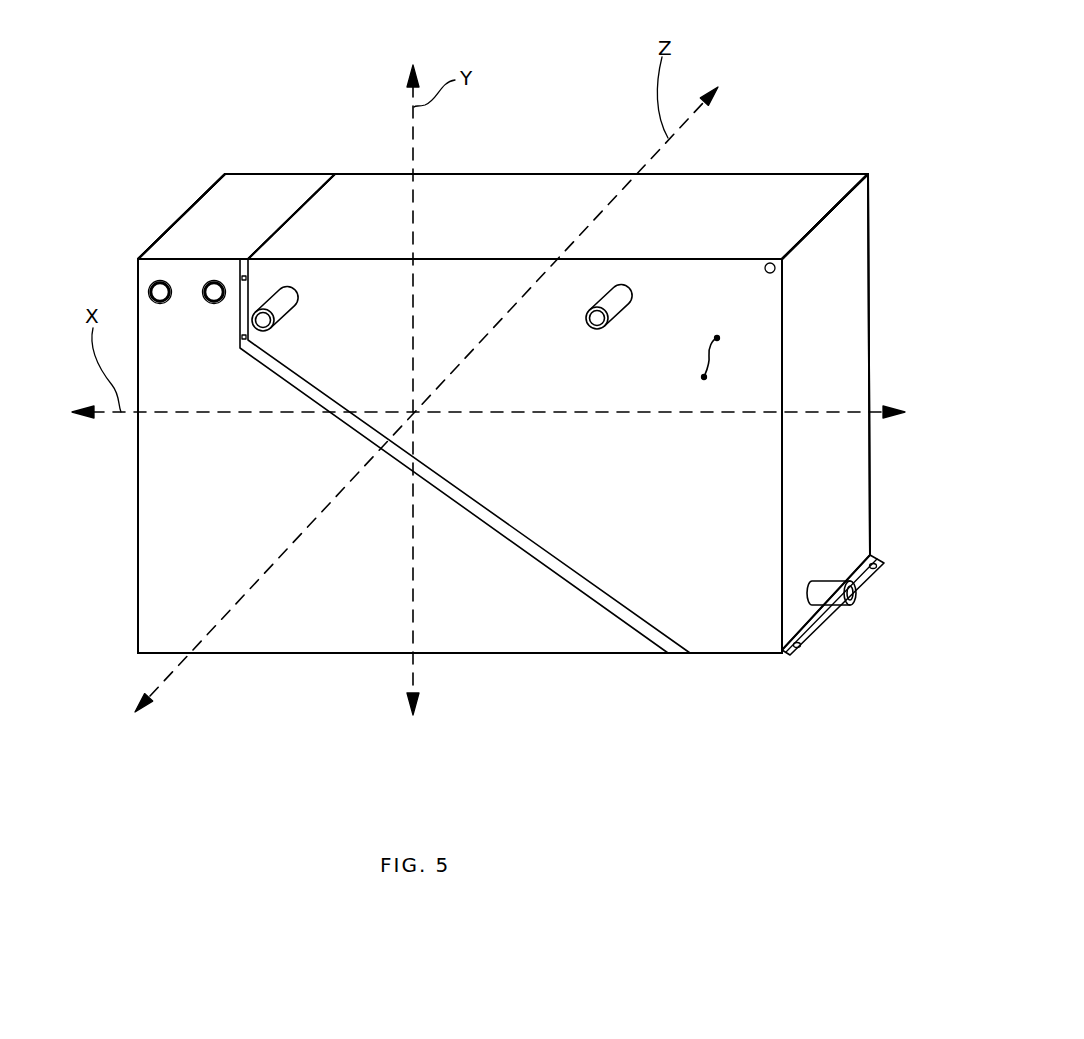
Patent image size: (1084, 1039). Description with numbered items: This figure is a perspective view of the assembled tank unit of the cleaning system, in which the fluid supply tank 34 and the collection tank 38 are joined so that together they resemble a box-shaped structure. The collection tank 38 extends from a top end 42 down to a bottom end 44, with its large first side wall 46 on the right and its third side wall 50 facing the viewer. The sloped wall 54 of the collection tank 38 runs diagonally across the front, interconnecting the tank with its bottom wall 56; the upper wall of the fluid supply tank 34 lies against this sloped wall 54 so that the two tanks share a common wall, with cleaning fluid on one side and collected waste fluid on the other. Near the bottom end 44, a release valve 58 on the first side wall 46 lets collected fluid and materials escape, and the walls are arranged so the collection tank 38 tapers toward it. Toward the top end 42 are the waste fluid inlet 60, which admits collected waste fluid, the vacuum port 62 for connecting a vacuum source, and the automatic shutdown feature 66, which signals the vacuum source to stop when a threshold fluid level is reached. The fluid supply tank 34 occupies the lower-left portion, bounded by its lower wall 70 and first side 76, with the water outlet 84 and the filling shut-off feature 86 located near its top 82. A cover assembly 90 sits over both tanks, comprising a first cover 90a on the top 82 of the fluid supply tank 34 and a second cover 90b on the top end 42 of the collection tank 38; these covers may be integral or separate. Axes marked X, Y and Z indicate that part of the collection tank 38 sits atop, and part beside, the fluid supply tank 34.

The fluid supply tank 34 is at (262, 680).
The collection tank 38 is at (773, 148).
The top end 42 is at (543, 174).
The bottom end 44 is at (703, 653).
The first side wall 46 is at (841, 370).
The third side wall 50 is at (641, 499).
The sloped wall 54 is at (527, 553).
The bottom wall 56 is at (835, 606).
The release valve 58 is at (833, 606).
The waste fluid inlet 60 is at (617, 316).
The vacuum port 62 is at (290, 313).
The automatic shutdown feature 66 is at (709, 356).
The lower wall 70 is at (323, 653).
The first side 76 is at (138, 503).
The top 82 is at (263, 174).
The water outlet 84 is at (213, 280).
The filling shut-off feature 86 is at (160, 280).
The cover assembly 90 is at (452, 188).
The first cover 90a is at (262, 225).
The second cover 90b is at (517, 224).